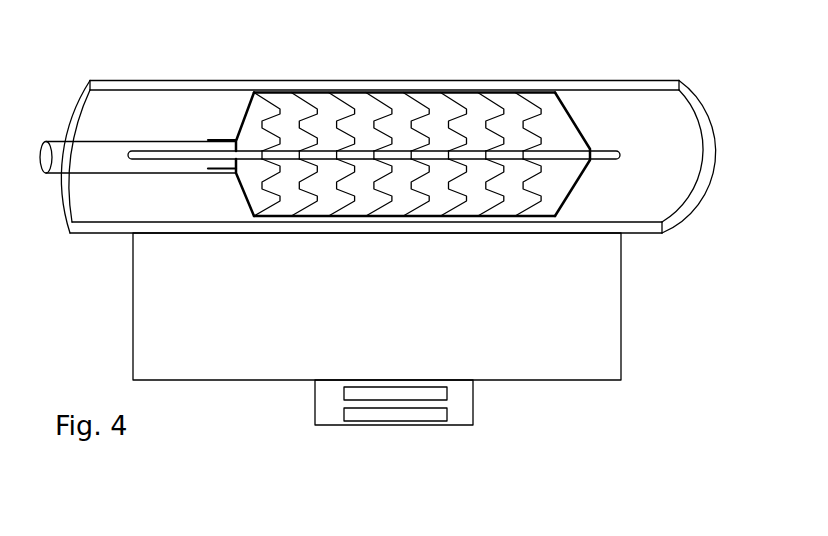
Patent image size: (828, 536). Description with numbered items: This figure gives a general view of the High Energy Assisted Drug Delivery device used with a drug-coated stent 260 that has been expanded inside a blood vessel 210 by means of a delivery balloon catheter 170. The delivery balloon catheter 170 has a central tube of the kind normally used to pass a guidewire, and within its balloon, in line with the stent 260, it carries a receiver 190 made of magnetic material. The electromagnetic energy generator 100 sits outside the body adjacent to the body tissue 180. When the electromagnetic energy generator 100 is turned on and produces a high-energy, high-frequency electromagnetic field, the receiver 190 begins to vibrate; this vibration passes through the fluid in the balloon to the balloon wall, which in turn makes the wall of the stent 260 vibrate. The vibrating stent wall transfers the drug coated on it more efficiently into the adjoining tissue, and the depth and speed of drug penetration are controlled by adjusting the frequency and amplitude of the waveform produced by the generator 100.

The electromagnetic energy generator 100 is at (357, 413).
The delivery balloon catheter 170 is at (150, 173).
The body tissue 180 is at (539, 350).
The receiver 190 is at (348, 159).
The blood vessel 210 is at (367, 90).
The stent 260 is at (476, 117).